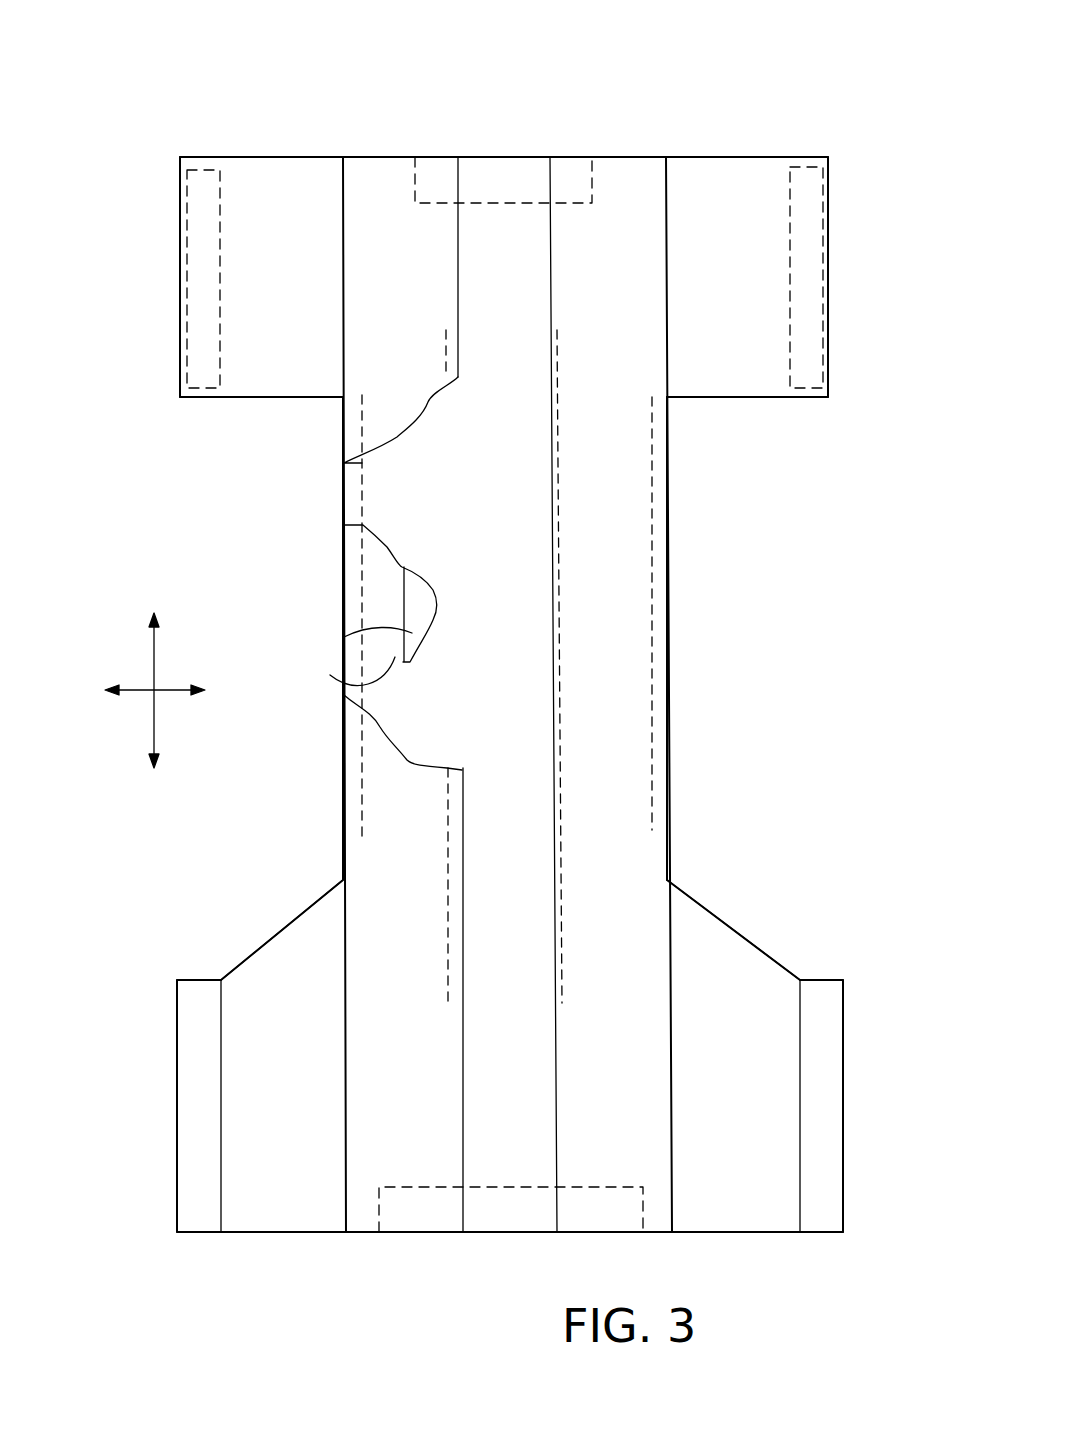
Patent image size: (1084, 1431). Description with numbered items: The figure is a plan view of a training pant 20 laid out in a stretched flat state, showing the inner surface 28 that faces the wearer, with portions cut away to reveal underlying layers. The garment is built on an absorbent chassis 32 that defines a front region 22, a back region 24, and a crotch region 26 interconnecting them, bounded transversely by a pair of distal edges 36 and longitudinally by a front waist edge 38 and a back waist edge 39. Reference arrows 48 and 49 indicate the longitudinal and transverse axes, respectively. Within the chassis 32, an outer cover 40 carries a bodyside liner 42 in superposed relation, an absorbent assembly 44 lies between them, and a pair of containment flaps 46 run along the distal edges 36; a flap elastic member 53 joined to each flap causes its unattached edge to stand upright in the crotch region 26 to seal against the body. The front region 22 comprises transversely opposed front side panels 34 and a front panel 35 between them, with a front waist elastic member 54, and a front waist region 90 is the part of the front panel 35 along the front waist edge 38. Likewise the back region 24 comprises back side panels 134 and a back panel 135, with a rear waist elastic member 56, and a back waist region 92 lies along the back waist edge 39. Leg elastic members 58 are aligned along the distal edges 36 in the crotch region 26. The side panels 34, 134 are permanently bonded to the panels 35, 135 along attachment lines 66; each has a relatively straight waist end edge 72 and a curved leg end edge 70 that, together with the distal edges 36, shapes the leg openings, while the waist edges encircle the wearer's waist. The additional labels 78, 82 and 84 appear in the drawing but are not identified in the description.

The training pant 20 is at (628, 80).
The front region 22 is at (180, 205).
The back region 24 is at (806, 972).
The crotch region 26 is at (683, 746).
The inner surface 28 is at (725, 1232).
The absorbent chassis 32 is at (672, 716).
The front side panels 34 is at (235, 315).
The front panel 35 is at (430, 217).
The distal edges 36 is at (183, 358).
The front waist edge 38 is at (397, 157).
The back waist edge 39 is at (370, 1232).
The outer cover 40 is at (393, 659).
The bodyside liner 42 is at (485, 533).
The absorbent assembly 44 is at (344, 637).
The containment flaps 46 is at (458, 258).
The longitudinal axis arrow 48 is at (153, 660).
The transverse axis arrow 49 is at (136, 690).
The flap elastic member 53 is at (455, 340).
The front waist elastic member 54 is at (508, 167).
The rear waist elastic member 56 is at (612, 1217).
The leg elastic members 58 is at (362, 497).
The attachment lines 66 is at (343, 338).
The leg end edges 70 is at (300, 397).
The waist end edges 72 is at (305, 157).
The back panel 78 is at (313, 1143).
The fastening component 82 is at (187, 283).
The side panel seam 84 is at (203, 1078).
The front waist region 90 is at (530, 177).
The back waist region 92 is at (530, 1210).
The back side panels 134 is at (300, 1113).
The back panel 135 is at (417, 1163).